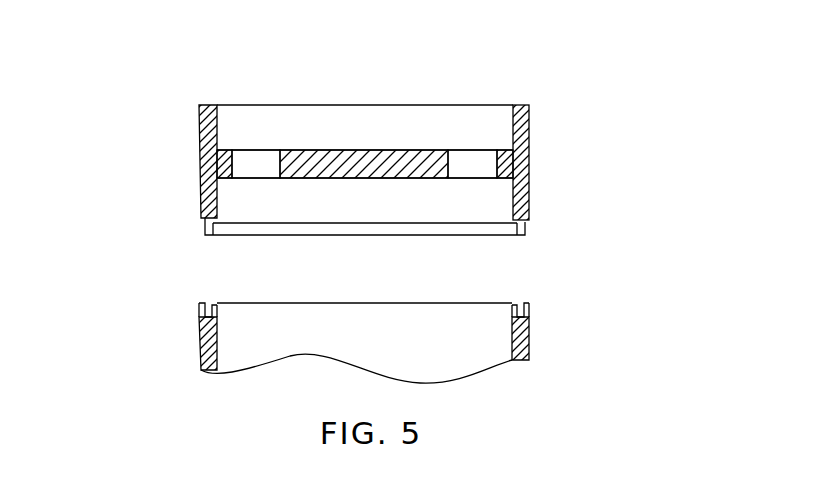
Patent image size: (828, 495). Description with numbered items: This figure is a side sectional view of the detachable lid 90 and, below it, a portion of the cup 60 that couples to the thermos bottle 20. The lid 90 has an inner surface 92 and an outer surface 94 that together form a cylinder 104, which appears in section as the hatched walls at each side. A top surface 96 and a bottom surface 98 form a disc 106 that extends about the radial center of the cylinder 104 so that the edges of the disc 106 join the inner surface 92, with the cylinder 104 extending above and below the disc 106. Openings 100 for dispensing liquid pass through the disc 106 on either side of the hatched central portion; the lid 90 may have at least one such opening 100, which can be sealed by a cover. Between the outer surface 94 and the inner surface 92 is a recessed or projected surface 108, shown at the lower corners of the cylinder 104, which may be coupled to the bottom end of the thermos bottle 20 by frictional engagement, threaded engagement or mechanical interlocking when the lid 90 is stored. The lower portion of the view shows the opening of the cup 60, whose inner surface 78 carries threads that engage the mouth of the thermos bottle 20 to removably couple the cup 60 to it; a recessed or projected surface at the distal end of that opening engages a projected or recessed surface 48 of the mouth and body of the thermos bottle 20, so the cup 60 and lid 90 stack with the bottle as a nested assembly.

The lid 90 is at (362, 149).
The inner surface 92 is at (348, 136).
The outer surface 94 is at (529, 142).
The top surface 96 is at (383, 149).
The bottom surface 98 is at (349, 180).
The openings 100 is at (257, 163).
The cylinder 104 is at (193, 135).
The disc 106 is at (332, 146).
The recessed or projected surface 108 is at (199, 230).
The thermos bottle 20 is at (303, 320).
The cup 60 is at (303, 320).
The projected or recessed surface 48 is at (365, 287).
The inner surface 78 is at (523, 305).